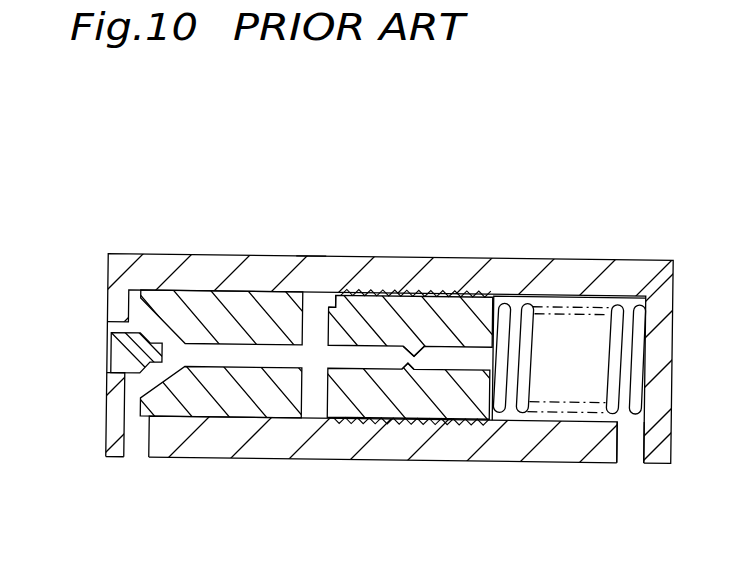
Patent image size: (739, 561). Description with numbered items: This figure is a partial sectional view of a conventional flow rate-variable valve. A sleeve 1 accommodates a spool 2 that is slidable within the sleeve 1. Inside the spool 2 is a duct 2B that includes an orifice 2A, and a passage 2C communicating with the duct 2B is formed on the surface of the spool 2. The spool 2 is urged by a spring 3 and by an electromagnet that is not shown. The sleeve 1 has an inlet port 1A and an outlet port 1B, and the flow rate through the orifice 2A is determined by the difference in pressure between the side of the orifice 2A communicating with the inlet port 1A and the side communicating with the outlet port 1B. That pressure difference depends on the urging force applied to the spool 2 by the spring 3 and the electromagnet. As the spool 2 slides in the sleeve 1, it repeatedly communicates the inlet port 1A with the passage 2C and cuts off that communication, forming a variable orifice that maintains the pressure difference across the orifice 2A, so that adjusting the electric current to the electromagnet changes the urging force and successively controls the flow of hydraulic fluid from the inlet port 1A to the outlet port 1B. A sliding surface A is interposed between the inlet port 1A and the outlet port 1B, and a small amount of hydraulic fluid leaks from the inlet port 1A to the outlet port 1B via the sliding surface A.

The sleeve 1 is at (203, 443).
The inlet port 1A is at (310, 257).
The outlet port 1B is at (630, 452).
The spool 2 is at (455, 308).
The orifice 2A is at (403, 360).
The duct 2B is at (270, 353).
The passage 2C is at (326, 292).
The spring 3 is at (583, 296).
The sliding surface A is at (423, 290).